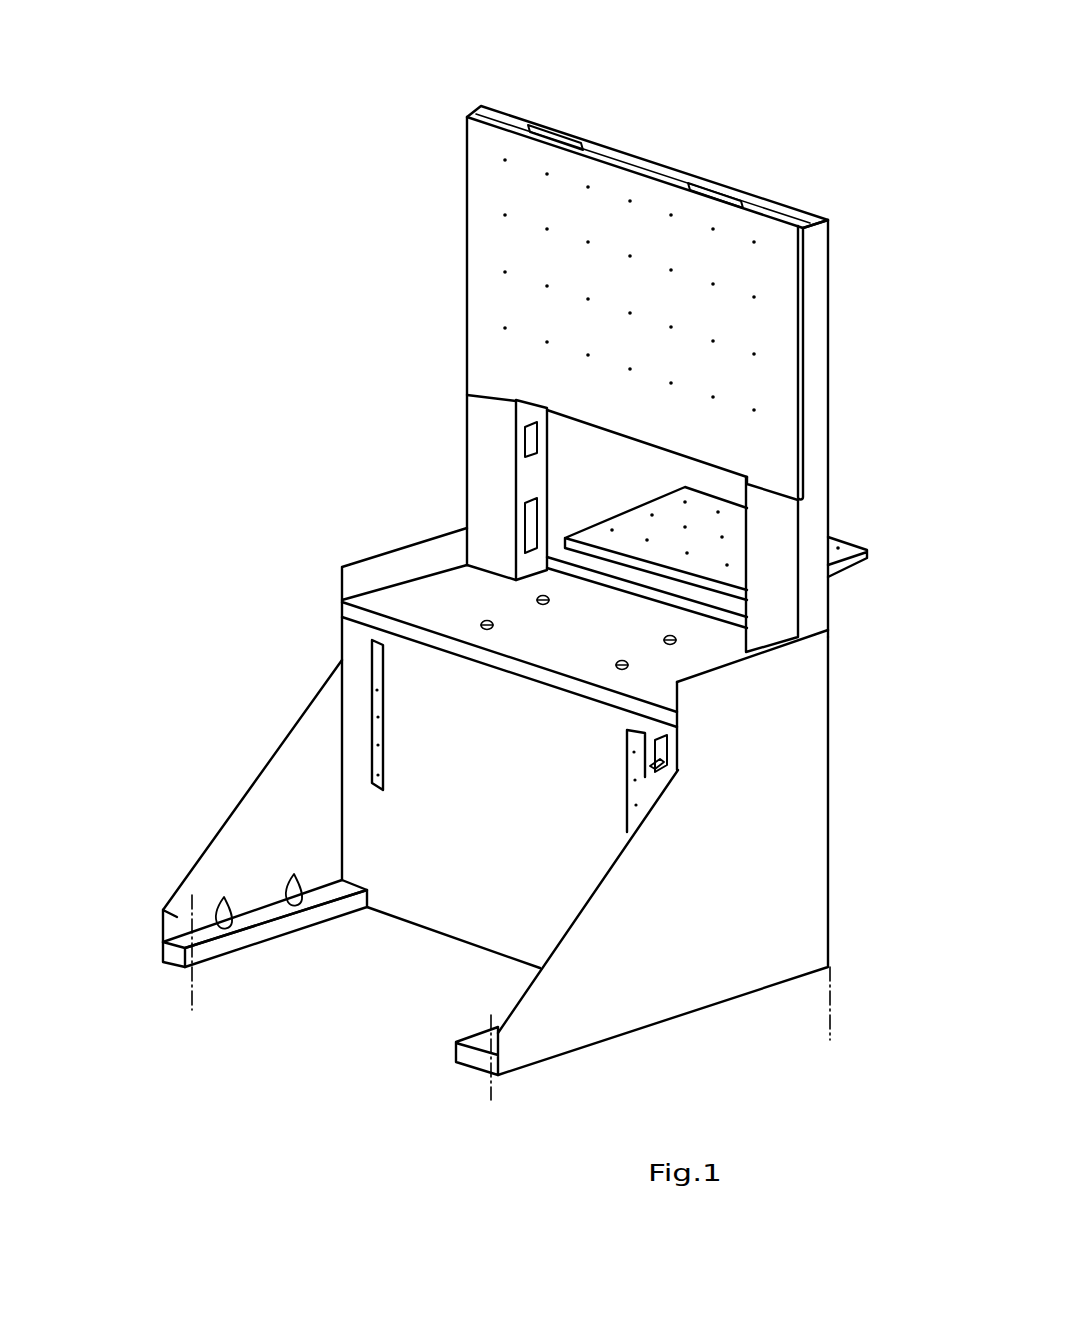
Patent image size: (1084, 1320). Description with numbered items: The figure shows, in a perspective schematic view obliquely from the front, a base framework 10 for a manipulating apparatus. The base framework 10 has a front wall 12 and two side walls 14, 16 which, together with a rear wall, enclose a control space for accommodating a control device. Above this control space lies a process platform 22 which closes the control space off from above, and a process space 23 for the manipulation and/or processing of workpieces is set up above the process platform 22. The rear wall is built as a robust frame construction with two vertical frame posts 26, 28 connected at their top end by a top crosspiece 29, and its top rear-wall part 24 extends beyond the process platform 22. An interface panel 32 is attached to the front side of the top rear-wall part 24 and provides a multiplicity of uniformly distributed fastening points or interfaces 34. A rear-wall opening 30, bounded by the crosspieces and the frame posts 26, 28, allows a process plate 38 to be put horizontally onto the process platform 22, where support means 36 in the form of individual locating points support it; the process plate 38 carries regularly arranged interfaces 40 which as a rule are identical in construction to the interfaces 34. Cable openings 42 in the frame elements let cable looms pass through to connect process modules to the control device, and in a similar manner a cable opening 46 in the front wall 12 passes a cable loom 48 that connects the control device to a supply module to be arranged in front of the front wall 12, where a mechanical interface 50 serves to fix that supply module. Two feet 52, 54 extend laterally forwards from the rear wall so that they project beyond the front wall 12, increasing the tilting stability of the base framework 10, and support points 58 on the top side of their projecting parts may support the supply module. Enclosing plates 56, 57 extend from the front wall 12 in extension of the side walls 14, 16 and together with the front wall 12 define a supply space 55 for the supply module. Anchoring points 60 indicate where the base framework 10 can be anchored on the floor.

The base framework 10 is at (300, 284).
The front wall 12 is at (427, 890).
The side wall 14 is at (790, 866).
The side wall 16 is at (325, 633).
The process platform 22 is at (443, 600).
The process space 23 is at (597, 645).
The top rear-wall part 24 is at (458, 215).
The frame post 26 is at (811, 530).
The frame post 28 is at (490, 440).
The top crosspiece 29 is at (608, 152).
The rear-wall opening 30 is at (622, 483).
The interface panel 32 is at (733, 237).
The interfaces 34 is at (637, 203).
The support means 36 is at (670, 640).
The process plate 38 is at (853, 567).
The interfaces 40 is at (718, 512).
The cable openings 42 is at (560, 125).
The cable opening 46 is at (667, 742).
The cable loom 48 is at (652, 765).
The mechanical interface 50 is at (380, 720).
The foot 52 is at (476, 1055).
The foot 54 is at (205, 950).
The supply space 55 is at (481, 845).
The enclosing plate 56 is at (163, 910).
The enclosing plate 57 is at (288, 805).
The support points 58 is at (295, 890).
The anchoring points 60 is at (192, 992).